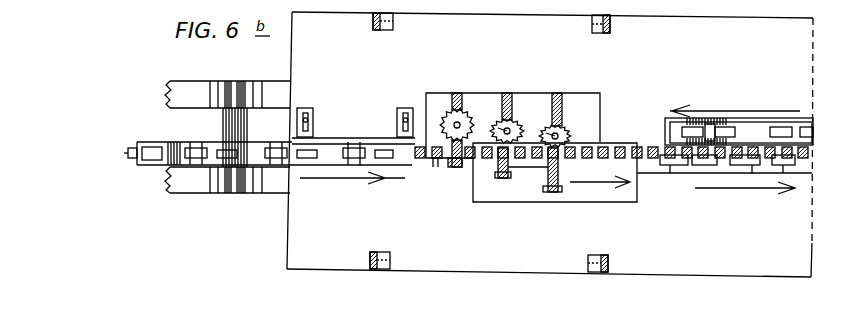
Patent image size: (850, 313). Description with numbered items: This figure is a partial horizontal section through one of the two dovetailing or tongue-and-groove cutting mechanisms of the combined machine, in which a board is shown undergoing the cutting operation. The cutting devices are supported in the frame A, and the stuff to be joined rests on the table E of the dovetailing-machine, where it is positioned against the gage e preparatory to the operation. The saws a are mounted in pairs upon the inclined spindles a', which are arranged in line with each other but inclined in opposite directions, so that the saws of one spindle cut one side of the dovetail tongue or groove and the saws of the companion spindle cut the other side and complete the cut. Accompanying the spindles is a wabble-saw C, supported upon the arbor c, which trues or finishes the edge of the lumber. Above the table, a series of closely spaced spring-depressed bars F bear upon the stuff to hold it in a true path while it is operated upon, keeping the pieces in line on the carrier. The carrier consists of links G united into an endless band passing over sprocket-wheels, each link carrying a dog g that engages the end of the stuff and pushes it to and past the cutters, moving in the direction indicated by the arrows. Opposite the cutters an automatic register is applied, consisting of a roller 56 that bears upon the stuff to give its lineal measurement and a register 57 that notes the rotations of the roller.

The table E is at (492, 53).
The frame A is at (227, 137).
The dog g is at (128, 152).
The gage e is at (352, 138).
The links G is at (333, 158).
The wabble-saw C is at (460, 120).
The arbor c is at (454, 123).
The saws a is at (534, 123).
The inclined spindles a' is at (535, 114).
The spring-depressed bars F is at (606, 147).
The roller 56 is at (497, 173).
The register 57 is at (450, 166).